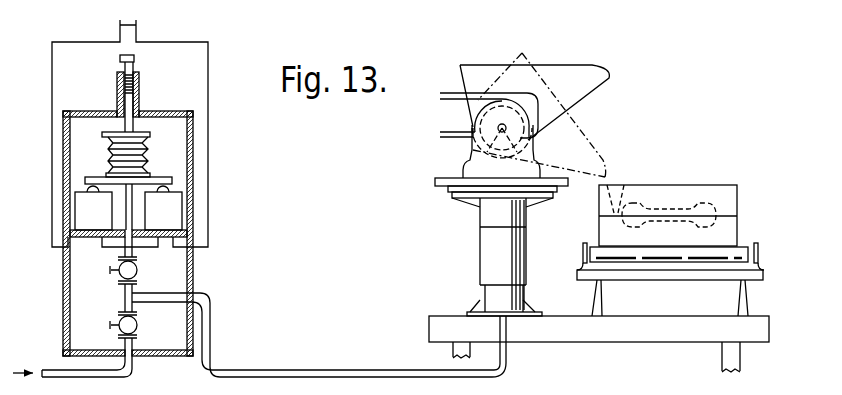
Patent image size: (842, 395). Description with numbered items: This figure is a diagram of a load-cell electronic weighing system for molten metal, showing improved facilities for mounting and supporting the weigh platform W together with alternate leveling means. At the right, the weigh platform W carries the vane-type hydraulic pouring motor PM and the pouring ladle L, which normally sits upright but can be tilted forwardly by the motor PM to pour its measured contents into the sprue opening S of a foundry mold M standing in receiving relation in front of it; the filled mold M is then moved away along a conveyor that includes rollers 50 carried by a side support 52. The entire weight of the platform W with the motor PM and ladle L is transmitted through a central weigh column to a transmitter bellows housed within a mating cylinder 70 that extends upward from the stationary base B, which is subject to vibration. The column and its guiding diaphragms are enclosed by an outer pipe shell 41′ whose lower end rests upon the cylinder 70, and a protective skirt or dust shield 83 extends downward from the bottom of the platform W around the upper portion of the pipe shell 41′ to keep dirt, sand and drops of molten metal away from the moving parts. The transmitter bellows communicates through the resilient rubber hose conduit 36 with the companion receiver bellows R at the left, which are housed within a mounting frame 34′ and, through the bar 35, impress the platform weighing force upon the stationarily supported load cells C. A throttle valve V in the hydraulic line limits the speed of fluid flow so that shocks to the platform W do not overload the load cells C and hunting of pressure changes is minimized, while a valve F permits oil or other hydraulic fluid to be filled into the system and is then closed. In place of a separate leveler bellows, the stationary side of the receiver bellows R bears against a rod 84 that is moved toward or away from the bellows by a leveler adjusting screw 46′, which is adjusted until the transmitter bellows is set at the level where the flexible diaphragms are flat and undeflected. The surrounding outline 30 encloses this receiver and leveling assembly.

The support frame 30 is at (138, 25).
The mounting frame 34′ is at (63, 300).
The rod 84 is at (130, 103).
The leveler adjusting screw 46′ is at (120, 57).
The receiver bellows R is at (110, 153).
The bar 35 is at (85, 180).
The load cells C is at (220, 213).
The throttle valve V is at (137, 270).
The valve F is at (137, 325).
The hydraulic conduit 36 is at (353, 377).
The pouring ladle L is at (573, 50).
The vane-type hydraulic motor PM is at (478, 120).
The weigh platform W is at (437, 180).
The protective skirt or dust shield 83 is at (527, 218).
The outer pipe shell 41′ is at (480, 262).
The mating cylinder 70 is at (484, 297).
The stationary base B is at (620, 343).
The foundry mold M is at (737, 208).
The sprue opening S is at (614, 185).
The rollers 50 is at (678, 263).
The right side support 52 is at (757, 262).